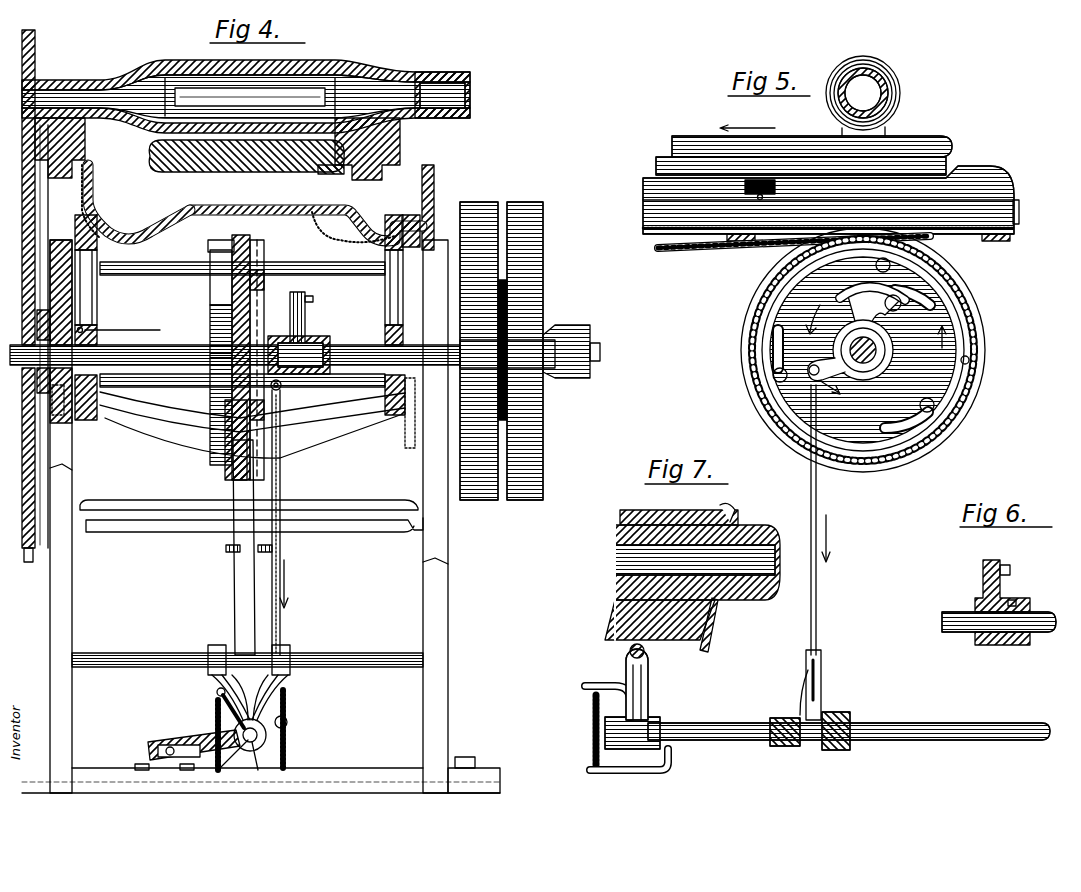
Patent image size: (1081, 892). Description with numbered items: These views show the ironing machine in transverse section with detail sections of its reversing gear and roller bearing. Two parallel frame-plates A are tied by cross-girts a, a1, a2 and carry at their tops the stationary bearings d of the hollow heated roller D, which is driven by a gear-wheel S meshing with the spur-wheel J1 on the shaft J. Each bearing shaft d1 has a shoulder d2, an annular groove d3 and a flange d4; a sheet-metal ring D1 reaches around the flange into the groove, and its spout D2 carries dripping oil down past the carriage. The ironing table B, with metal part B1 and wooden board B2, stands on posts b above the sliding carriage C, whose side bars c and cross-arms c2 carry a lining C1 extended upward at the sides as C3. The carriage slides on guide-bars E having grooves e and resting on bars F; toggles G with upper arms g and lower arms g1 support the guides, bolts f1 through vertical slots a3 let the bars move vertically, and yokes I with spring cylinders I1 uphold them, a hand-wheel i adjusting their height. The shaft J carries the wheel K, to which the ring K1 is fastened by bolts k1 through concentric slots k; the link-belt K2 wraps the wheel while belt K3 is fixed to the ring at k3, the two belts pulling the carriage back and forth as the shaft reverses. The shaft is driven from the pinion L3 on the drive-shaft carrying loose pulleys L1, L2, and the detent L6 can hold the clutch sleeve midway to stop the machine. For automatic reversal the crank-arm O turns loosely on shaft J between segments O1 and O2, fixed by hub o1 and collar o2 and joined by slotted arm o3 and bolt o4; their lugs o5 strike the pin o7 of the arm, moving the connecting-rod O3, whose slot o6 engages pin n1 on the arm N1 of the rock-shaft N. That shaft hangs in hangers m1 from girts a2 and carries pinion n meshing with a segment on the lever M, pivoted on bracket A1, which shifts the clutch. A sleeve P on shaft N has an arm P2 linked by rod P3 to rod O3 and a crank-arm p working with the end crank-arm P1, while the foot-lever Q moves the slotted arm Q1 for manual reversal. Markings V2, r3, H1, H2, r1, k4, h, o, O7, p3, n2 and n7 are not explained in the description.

In FIG. 4, the gear-wheel S is at (24, 70).
In FIG. 4, the ironing or smoothing roller D is at (246, 96).
In FIG. 5, the ironing or smoothing roller D is at (830, 112).
In FIG. 4, the sheet-metal ring D1 is at (108, 82).
In FIG. 7, the sheet-metal ring D1 is at (692, 560).
In FIG. 4, the tube or spout D2 is at (396, 140).
In FIG. 7, the tube or spout D2 is at (710, 648).
In FIG. 4, the bearings d is at (78, 80).
In FIG. 5, the bearings d is at (888, 130).
In FIG. 7, the bearings d is at (620, 518).
In FIG. 4, the bearing arms or shafts d1 is at (64, 97).
In FIG. 7, the bearing arms or shafts d1 is at (763, 503).
In FIG. 4, the shoulders d2 is at (448, 73).
In FIG. 7, the shoulders d2 is at (716, 506).
In FIG. 7, the annular grooves d3 is at (743, 556).
In FIG. 7, the annular ribs d4 is at (725, 625).
In FIG. 4, the ironing board or table B is at (246, 156).
In FIG. 5, the ironing board or table B is at (801, 162).
In FIG. 4, the metal part of table B1 is at (320, 174).
In FIG. 5, the metal part of table B1 is at (656, 168).
In FIG. 4, the wooden part or board B2 is at (344, 152).
In FIG. 5, the wooden part or board B2 is at (802, 143).
In FIG. 4, the sliding carriage C is at (252, 203).
In FIG. 5, the sliding carriage C is at (836, 200).
In FIG. 4, the sheet-metal lining C1 is at (242, 218).
In FIG. 5, the sheet-metal lining C1 is at (656, 236).
In FIG. 4, the upward extensions of lining C3 is at (418, 176).
In FIG. 5, the upward extensions of lining C3 is at (975, 159).
In FIG. 4, the longitudinal side bars c is at (237, 235).
In FIG. 4, the cross bars or ribs c2 is at (268, 233).
In FIG. 5, the cross bars or ribs c2 is at (858, 244).
In FIG. 4, the guide-grooves e is at (237, 232).
In FIG. 4, the opening o is at (412, 207).
In FIG. 4, the guide-bars E is at (239, 270).
In FIG. 4, the gear-pinion L3 is at (32, 258).
In FIG. 4, the plate V2 is at (34, 216).
In FIG. 4, the spur-wheel J1 is at (30, 296).
In FIG. 4, the loose pulley L1 is at (30, 326).
In FIG. 4, the loose pulley L2 is at (546, 302).
In FIG. 4, the detent L6 is at (119, 321).
In FIG. 4, the shaft J is at (358, 345).
In FIG. 6, the shaft J is at (950, 612).
In FIG. 4, the cross-girt a1 is at (242, 324).
In FIG. 4, the upper toggle arms g is at (242, 293).
In FIG. 4, the toggles G is at (247, 316).
In FIG. 4, the lower toggle arms g1 is at (239, 335).
In FIG. 4, the roller r3 is at (152, 318).
In FIG. 4, the hanger H1 is at (238, 348).
In FIG. 4, the hanger H2 is at (170, 395).
In FIG. 4, the roller r1 is at (197, 397).
In FIG. 4, the wheel or pulley K is at (230, 290).
In FIG. 5, the wheel or pulley K is at (863, 350).
In FIG. 4, the ring K1 is at (266, 360).
In FIG. 5, the ring K1 is at (968, 310).
In FIG. 4, the link-belt K2 is at (277, 225).
In FIG. 5, the link-belt K2 is at (794, 253).
In FIG. 5, the link-belt K3 is at (745, 356).
In FIG. 5, the concentric slots k is at (842, 354).
In FIG. 4, the bolts k1 is at (276, 251).
In FIG. 5, the bolts k1 is at (950, 428).
In FIG. 5, the belt attachment point k3 is at (970, 360).
In FIG. 4, the stud k4 is at (256, 325).
In FIG. 4, the hub h is at (221, 238).
In FIG. 4, the crank-arm O is at (299, 365).
In FIG. 5, the crank-arm O is at (826, 368).
In FIG. 4, the segment O1 is at (310, 410).
In FIG. 5, the segment O1 is at (865, 333).
In FIG. 5, the segment O2 is at (893, 326).
In FIG. 6, the segment O2 is at (983, 586).
In FIG. 4, the connecting-rod O3 is at (285, 522).
In FIG. 5, the connecting-rod O3 is at (820, 552).
In FIG. 4, the pivot O7 is at (308, 413).
In FIG. 4, the hub o1 is at (332, 325).
In FIG. 6, the hub o1 is at (1019, 645).
In FIG. 4, the collar o2 is at (322, 307).
In FIG. 4, the slotted arm o3 is at (315, 294).
In FIG. 6, the slotted arm o3 is at (1000, 551).
In FIG. 5, the bolt o4 is at (837, 341).
In FIG. 6, the bolt o4 is at (1010, 570).
In FIG. 4, the lugs or projections o5 is at (316, 323).
In FIG. 5, the lugs or projections o5 is at (868, 347).
In FIG. 4, the slot o6 is at (296, 700).
In FIG. 5, the slot o6 is at (798, 692).
In FIG. 6, the pin or projection o7 is at (975, 645).
In FIG. 4, the cross-pieces or yokes I is at (330, 440).
In FIG. 4, the hollow cylinder I1 is at (224, 460).
In FIG. 4, the horizontal bars F is at (240, 406).
In FIG. 4, the bolts f1 is at (52, 398).
In FIG. 4, the frame-plates A is at (261, 516).
In FIG. 4, the bracket A1 is at (306, 491).
In FIG. 4, the cross-girt a is at (146, 504).
In FIG. 4, the cross-girts a2 is at (247, 657).
In FIG. 5, the vertical slots a3 is at (630, 651).
In FIG. 4, the hand-wheel i is at (226, 549).
In FIG. 4, the lever M is at (244, 547).
In FIG. 4, the hangers m1 is at (222, 682).
In FIG. 5, the hangers m1 is at (649, 684).
In FIG. 4, the arm p3 is at (246, 663).
In FIG. 5, the sleeve P is at (726, 724).
In FIG. 4, the crank-arm P1 is at (217, 694).
In FIG. 5, the crank-arm P1 is at (595, 698).
In FIG. 4, the rigid arm P2 is at (209, 735).
In FIG. 5, the rigid arm P2 is at (582, 718).
In FIG. 5, the connecting-rod P3 is at (792, 673).
In FIG. 4, the crank-arm p is at (196, 756).
In FIG. 5, the crank-arm p is at (632, 772).
In FIG. 4, the foot-lever Q is at (166, 742).
In FIG. 4, the slotted arm Q1 is at (179, 741).
In FIG. 4, the rock-shaft N is at (268, 740).
In FIG. 5, the rock-shaft N is at (922, 724).
In FIG. 4, the rigid arm N1 is at (291, 727).
In FIG. 5, the rigid arm N1 is at (837, 723).
In FIG. 4, the pinion n is at (254, 760).
In FIG. 5, the pin n1 is at (832, 695).
In FIG. 4, the collar n2 is at (268, 757).
In FIG. 5, the collar n2 is at (660, 713).
In FIG. 4, the spring n7 is at (293, 730).
In FIG. 5, the posts b is at (760, 189).